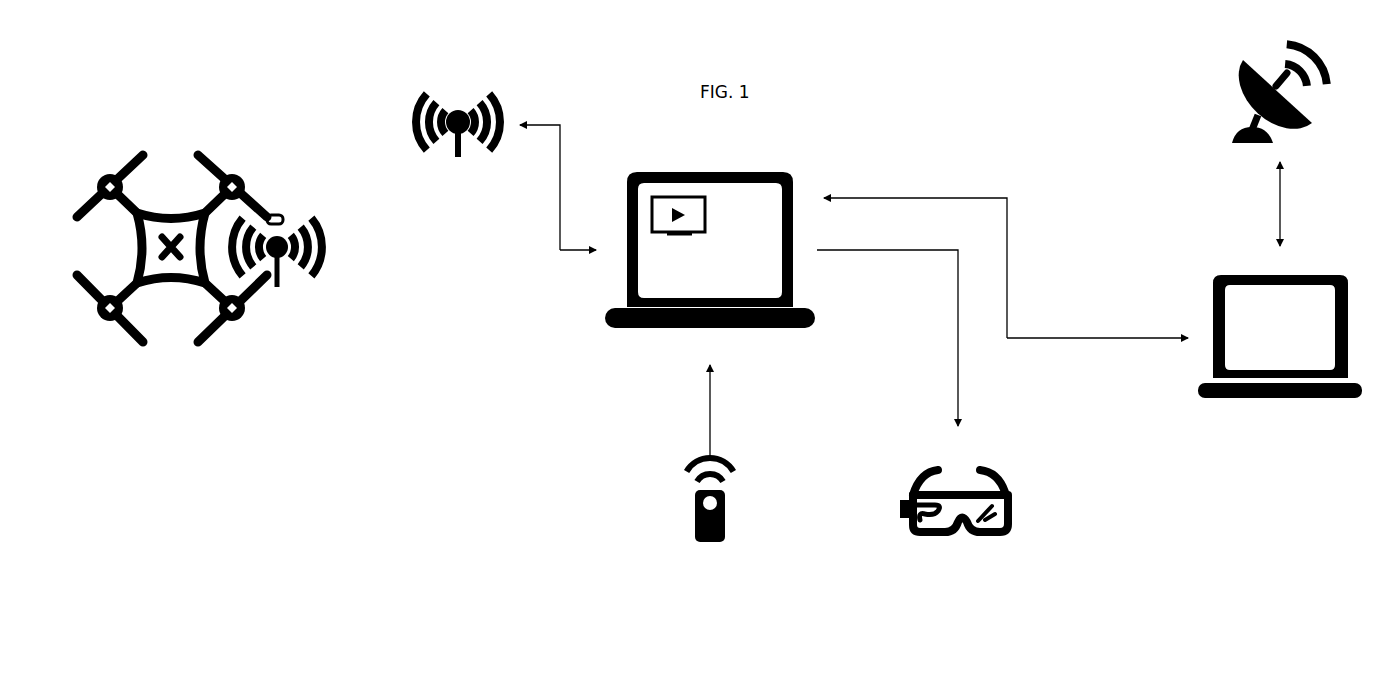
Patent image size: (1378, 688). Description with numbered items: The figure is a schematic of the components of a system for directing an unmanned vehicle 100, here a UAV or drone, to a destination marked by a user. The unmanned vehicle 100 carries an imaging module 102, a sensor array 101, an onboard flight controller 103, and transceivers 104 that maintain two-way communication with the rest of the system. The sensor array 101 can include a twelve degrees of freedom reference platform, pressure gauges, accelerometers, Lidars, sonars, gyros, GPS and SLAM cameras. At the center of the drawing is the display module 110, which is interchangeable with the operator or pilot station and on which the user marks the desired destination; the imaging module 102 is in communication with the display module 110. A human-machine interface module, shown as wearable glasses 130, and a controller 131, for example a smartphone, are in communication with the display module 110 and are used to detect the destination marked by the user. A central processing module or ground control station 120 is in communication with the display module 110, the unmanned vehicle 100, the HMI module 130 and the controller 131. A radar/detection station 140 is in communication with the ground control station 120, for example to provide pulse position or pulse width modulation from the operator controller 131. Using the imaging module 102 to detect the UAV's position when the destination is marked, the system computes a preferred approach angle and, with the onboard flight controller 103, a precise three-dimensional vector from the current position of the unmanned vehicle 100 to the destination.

The unmanned vehicle 100 is at (251, 285).
The sensor array 101 is at (213, 330).
The imaging module 102 is at (320, 227).
The onboard flight controller 103 is at (171, 236).
The transceivers 104 is at (307, 222).
The display module 110 is at (710, 250).
The central processing module 120 is at (1280, 336).
The human-machine interface module 130 is at (954, 538).
The controller 131 is at (735, 500).
The radar/detection station 140 is at (1259, 115).